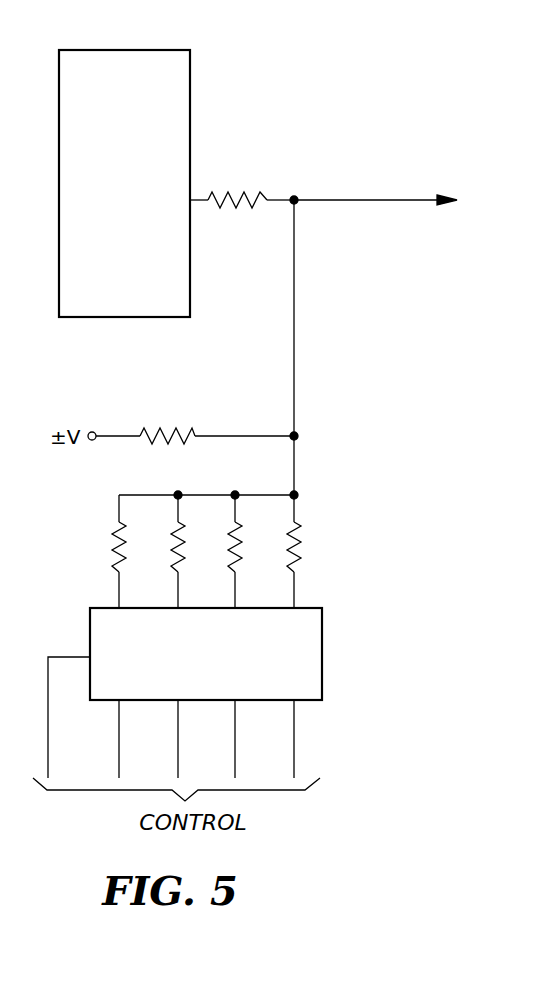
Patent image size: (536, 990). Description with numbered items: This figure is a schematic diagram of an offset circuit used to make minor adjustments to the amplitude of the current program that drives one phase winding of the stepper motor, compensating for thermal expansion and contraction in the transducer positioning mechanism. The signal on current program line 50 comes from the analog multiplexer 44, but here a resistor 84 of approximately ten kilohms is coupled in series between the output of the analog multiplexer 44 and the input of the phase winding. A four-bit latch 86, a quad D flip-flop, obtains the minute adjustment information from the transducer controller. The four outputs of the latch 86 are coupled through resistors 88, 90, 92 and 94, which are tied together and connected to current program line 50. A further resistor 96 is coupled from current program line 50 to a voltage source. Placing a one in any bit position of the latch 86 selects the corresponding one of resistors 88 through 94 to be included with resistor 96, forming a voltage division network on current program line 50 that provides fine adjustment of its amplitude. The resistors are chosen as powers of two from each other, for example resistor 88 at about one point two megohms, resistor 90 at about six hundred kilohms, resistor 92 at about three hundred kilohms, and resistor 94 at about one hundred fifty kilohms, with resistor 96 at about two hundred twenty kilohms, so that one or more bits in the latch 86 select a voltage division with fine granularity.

The analog multiplexer 44 is at (132, 48).
The resistor 84 is at (251, 195).
The current program line 50 is at (348, 200).
The resistor 96 is at (179, 430).
The resistor 88 is at (110, 546).
The resistor 90 is at (174, 540).
The resistor 92 is at (240, 548).
The resistor 94 is at (300, 553).
The four-bit latch 86 is at (325, 656).